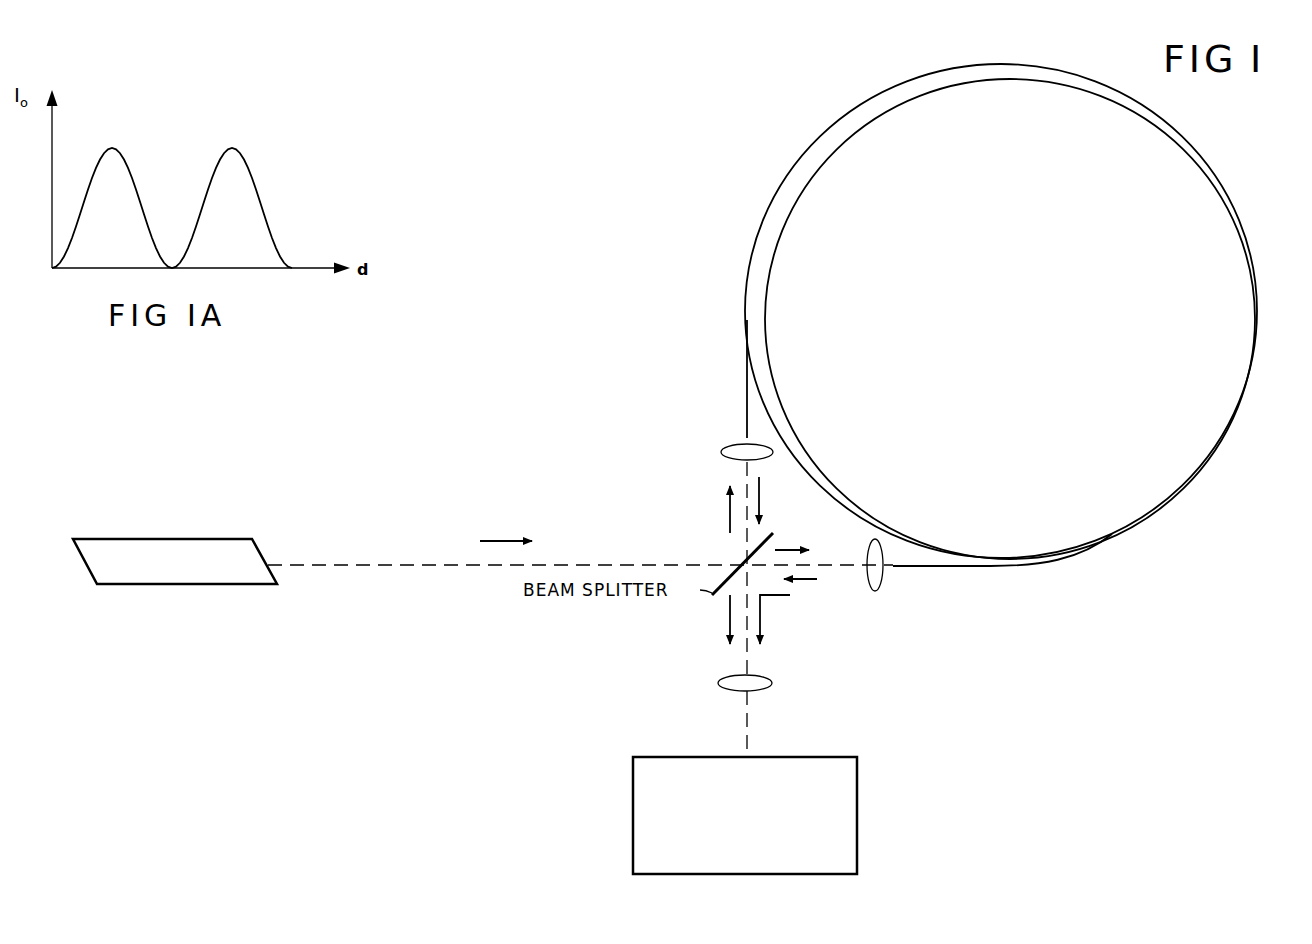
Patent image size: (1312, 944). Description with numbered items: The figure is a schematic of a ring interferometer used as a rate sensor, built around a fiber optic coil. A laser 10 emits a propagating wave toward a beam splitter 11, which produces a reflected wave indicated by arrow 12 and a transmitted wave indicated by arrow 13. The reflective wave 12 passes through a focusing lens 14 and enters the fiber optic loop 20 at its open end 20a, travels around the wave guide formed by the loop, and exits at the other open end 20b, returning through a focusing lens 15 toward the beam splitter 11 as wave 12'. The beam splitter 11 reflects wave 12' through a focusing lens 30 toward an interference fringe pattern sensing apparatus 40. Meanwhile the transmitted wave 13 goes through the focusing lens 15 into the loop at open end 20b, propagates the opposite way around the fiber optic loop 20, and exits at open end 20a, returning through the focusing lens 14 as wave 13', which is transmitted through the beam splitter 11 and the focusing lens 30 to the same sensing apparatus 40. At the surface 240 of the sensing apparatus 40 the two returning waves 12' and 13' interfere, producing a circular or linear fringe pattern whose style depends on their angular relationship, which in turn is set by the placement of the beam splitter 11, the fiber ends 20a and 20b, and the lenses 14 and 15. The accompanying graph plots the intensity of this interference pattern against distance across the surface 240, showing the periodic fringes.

The laser 10 is at (241, 538).
The beam splitter 11 is at (766, 538).
The reflective propagating wave 12 is at (705, 509).
The wave 12' is at (809, 611).
The transmitted propagating wave 13 is at (814, 539).
The wave 13' is at (744, 560).
The focusing lens 14 is at (721, 450).
The focusing lens 15 is at (882, 583).
The fiber optic loop 20 is at (766, 217).
The open end 20a is at (746, 425).
The open end 20b is at (953, 567).
The focusing lens 30 is at (720, 681).
The interference fringe pattern sensing apparatus 40 is at (758, 812).
The surface 240 is at (838, 757).